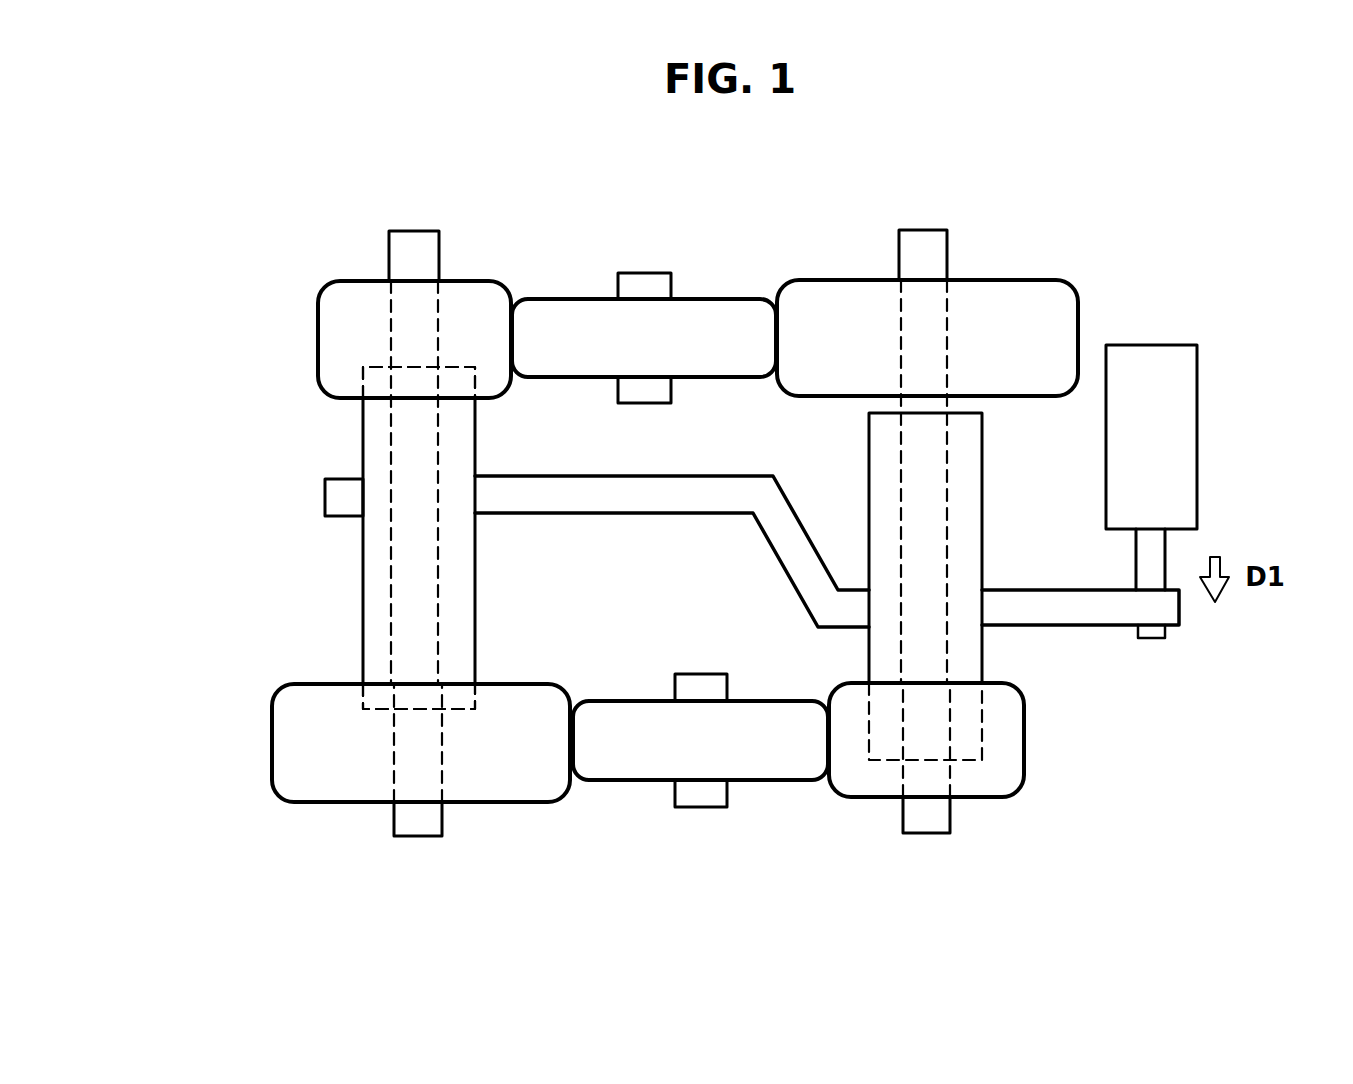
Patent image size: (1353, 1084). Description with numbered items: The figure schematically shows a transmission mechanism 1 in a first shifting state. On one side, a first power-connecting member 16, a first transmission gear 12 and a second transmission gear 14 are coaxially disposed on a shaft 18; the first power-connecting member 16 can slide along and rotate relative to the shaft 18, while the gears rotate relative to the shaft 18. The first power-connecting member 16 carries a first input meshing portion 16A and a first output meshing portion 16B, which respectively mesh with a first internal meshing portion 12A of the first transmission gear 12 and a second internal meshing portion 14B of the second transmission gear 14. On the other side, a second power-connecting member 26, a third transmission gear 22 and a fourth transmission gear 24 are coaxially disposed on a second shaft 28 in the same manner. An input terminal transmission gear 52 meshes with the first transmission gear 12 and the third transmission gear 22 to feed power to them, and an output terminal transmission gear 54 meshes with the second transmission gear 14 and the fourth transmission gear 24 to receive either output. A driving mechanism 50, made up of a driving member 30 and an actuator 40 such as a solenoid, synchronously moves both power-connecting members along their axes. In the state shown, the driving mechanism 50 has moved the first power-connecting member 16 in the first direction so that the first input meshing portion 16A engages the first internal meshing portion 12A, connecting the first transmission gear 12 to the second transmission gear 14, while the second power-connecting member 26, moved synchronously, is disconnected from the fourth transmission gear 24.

The transmission mechanism 1 is at (1174, 283).
The first transmission gear 12 is at (541, 790).
The first internal meshing portion 12A is at (419, 696).
The second transmission gear 14 is at (487, 288).
The second internal meshing portion 14B is at (419, 382).
The first power-connecting member 16 is at (476, 585).
The first input meshing portion 16A is at (362, 702).
The first output meshing portion 16B is at (362, 381).
The shaft 18 is at (427, 830).
The third transmission gear 22 is at (1000, 795).
The fourth transmission gear 24 is at (1023, 295).
The second power-connecting member 26 is at (982, 496).
The shaft 28 is at (918, 820).
The driving member 30 is at (1078, 618).
The actuator 40 is at (1189, 427).
The driving mechanism 50 is at (205, 155).
The input terminal transmission gear 52 is at (753, 768).
The output terminal transmission gear 54 is at (705, 305).